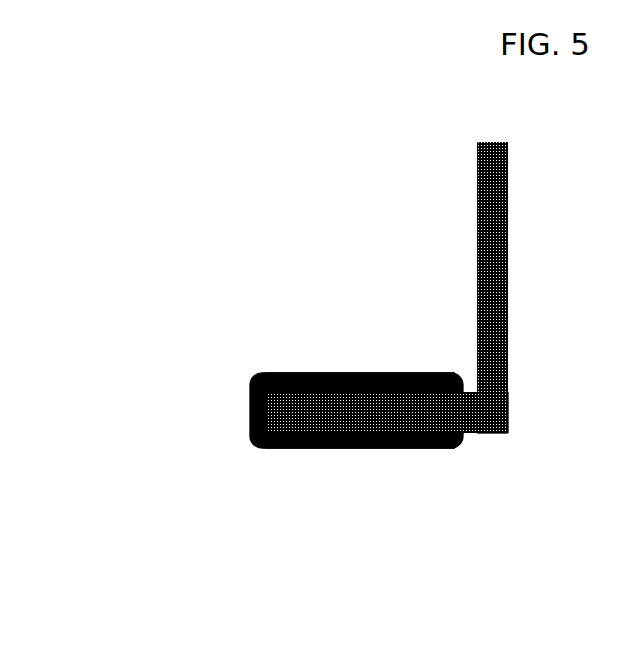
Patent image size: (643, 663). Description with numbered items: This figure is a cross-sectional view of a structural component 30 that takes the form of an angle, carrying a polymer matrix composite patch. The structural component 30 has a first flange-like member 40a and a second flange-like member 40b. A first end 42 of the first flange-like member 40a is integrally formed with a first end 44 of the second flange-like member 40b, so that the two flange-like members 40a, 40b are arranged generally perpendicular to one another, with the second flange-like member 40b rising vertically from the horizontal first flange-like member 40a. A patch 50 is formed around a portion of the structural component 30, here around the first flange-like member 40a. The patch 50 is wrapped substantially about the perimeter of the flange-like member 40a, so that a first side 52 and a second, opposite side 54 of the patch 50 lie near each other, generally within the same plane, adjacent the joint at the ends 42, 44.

The structural component 30 is at (264, 178).
The first flange-like member 40a is at (302, 418).
The second flange-like member 40b is at (483, 241).
The first end of the first flange-like member 42 is at (487, 427).
The first end of the second flange-like member 44 is at (492, 396).
The patch 50 is at (250, 420).
The first side of the patch 52 is at (452, 375).
The second side of the patch 54 is at (452, 448).